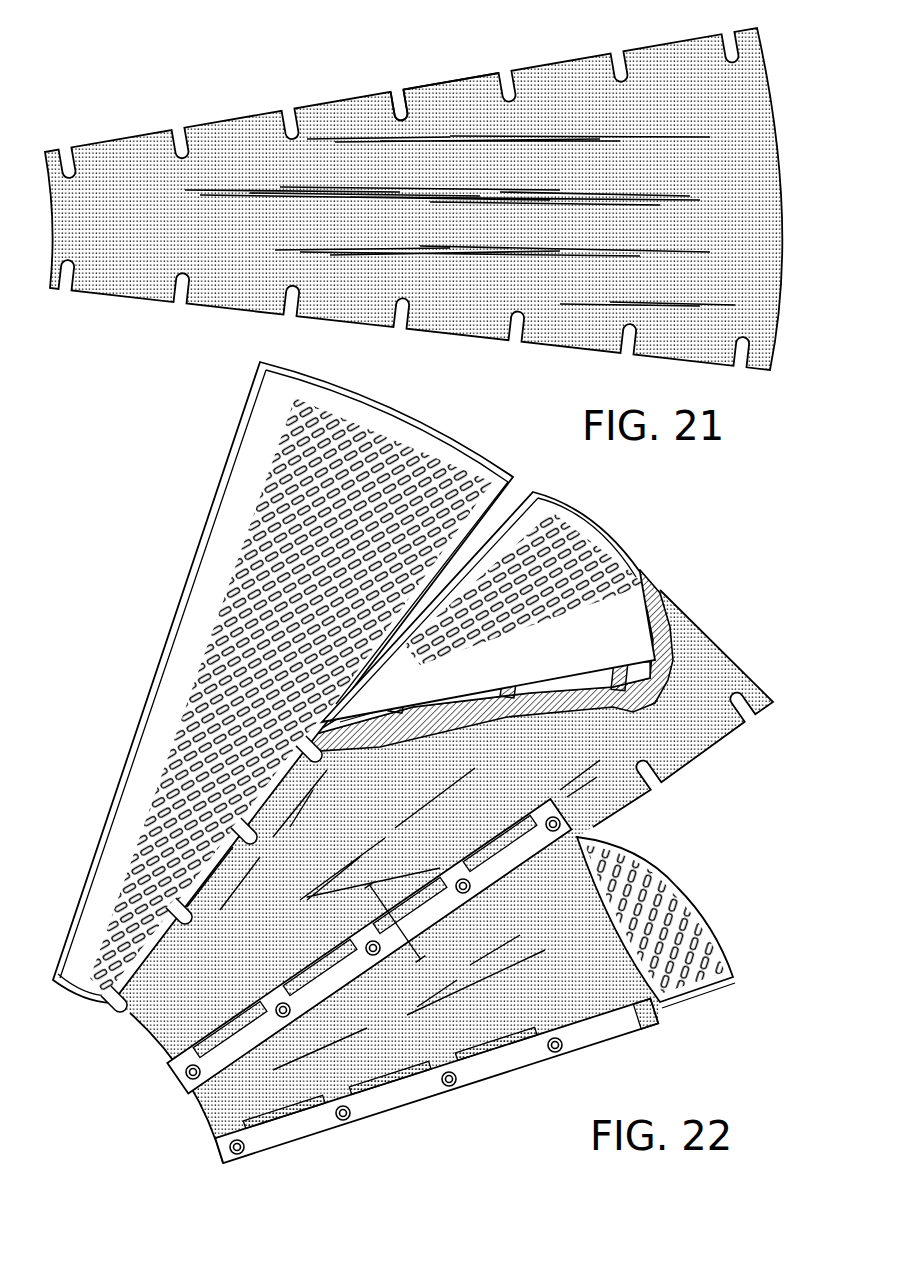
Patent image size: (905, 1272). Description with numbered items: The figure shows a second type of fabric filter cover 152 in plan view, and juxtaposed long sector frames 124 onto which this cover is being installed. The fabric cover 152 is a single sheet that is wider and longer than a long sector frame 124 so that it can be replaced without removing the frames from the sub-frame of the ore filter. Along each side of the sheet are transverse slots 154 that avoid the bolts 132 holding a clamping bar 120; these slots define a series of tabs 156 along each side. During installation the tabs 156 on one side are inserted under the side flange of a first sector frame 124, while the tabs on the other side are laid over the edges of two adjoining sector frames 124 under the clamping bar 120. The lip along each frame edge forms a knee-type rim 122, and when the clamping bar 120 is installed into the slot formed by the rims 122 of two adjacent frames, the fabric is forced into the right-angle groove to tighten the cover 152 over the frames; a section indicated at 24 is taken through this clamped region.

In FIG. 21, the fabric filter cover 152 is at (156, 66).
In FIG. 22, the fabric filter cover 152 is at (700, 655).
In FIG. 21, the transverse slots 154 is at (397, 100).
In FIG. 21, the tabs 156 is at (456, 77).
In FIG. 22, the knee-type rim 122 is at (409, 762).
In FIG. 22, the long sector frame 124 is at (197, 533).
In FIG. 22, the clamping bar 120 is at (200, 1038).
In FIG. 22, the bolts 132 is at (188, 1075).
In FIG. 22, the section line 24 is at (362, 888).